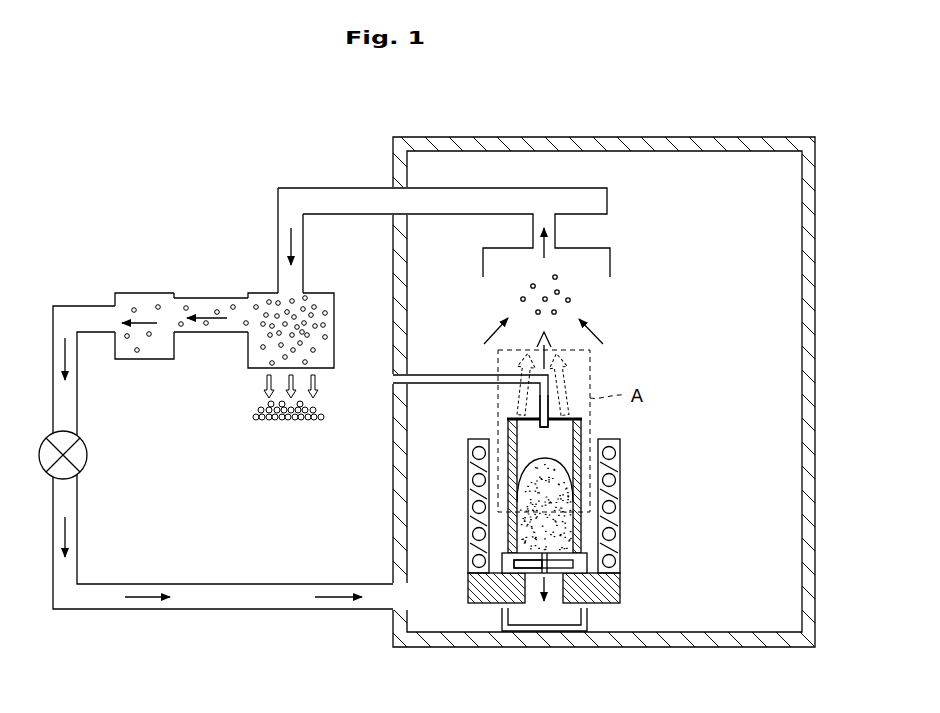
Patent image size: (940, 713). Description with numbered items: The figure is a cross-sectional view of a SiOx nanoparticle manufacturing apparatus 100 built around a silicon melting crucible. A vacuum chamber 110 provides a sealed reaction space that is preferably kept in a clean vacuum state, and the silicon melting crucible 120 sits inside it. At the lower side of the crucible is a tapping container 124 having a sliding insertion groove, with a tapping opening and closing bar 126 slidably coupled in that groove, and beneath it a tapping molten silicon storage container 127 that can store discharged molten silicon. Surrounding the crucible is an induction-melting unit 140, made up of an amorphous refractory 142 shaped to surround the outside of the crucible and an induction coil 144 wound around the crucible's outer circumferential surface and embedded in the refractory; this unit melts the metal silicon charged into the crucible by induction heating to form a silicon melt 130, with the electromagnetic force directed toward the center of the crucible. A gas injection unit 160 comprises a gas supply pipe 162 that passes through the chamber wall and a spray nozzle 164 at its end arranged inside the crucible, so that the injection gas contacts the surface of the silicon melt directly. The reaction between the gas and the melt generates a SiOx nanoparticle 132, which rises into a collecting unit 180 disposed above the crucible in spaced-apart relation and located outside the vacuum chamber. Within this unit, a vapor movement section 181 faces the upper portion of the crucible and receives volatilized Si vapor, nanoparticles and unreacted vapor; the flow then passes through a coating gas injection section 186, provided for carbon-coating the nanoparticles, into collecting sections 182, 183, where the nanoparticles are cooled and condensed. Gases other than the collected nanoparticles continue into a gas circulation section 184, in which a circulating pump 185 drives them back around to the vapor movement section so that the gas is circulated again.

The SiOx nanoparticle manufacturing apparatus 100 is at (724, 109).
The vacuum chamber 110 is at (815, 225).
The silicon melting crucible 120 is at (583, 421).
The tapping container 124 is at (580, 563).
The tapping opening and closing bar 126 is at (518, 563).
The tapping molten silicon storage container 127 is at (548, 628).
The silicon melt 130 is at (546, 475).
The SiOx nanoparticle 132 is at (570, 300).
The induction-melting unit 140 is at (603, 506).
The amorphous refractory 142 is at (613, 519).
The induction coil 144 is at (613, 483).
The gas injection unit 160 is at (328, 445).
The gas supply pipe 162 is at (440, 384).
The spray nozzle 164 is at (540, 405).
The collecting unit 180 is at (240, 277).
The vapor movement section 181 is at (550, 226).
The collecting section 182 is at (320, 302).
The collecting section 183 is at (152, 352).
The gas circulation section 184 is at (78, 533).
The circulating pump 185 is at (87, 455).
The coating gas injection section 186 is at (217, 325).